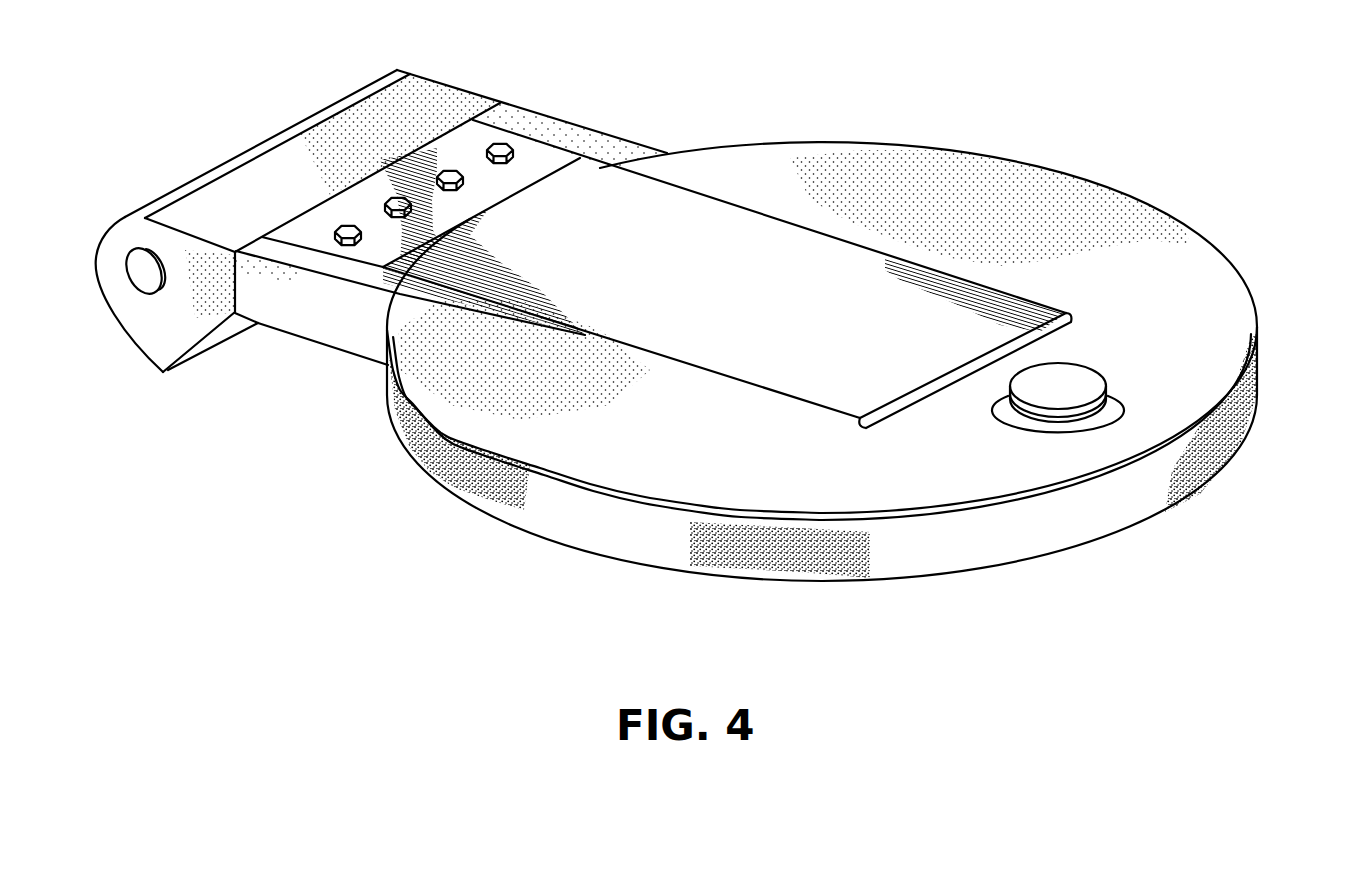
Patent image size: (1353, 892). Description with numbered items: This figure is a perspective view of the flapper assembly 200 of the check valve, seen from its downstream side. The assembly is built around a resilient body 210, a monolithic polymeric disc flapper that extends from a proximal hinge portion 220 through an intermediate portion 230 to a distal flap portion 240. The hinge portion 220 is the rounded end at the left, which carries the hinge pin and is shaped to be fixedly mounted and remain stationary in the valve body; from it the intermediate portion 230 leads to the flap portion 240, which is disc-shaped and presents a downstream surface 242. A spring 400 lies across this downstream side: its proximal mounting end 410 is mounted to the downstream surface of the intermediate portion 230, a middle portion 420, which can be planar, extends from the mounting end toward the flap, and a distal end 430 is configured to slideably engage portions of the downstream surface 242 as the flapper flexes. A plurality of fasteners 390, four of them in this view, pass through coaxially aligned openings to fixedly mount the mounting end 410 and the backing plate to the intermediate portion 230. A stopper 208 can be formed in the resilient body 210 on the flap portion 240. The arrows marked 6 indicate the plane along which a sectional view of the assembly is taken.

The flapper assembly 200 is at (924, 93).
The resilient body 210 is at (1148, 245).
The distal flap portion 240 is at (665, 545).
The downstream surface of the flap portion 242 is at (818, 500).
The stopper 208 is at (1062, 383).
The proximal hinge portion 220 is at (162, 313).
The intermediate portion 230 is at (360, 316).
The proximal mounting end 410 is at (465, 148).
The fasteners 390 is at (335, 231).
The spring 400 is at (728, 222).
The middle portion 420 is at (704, 338).
The distal end 430 is at (920, 400).
The section line 6 is at (225, 157).